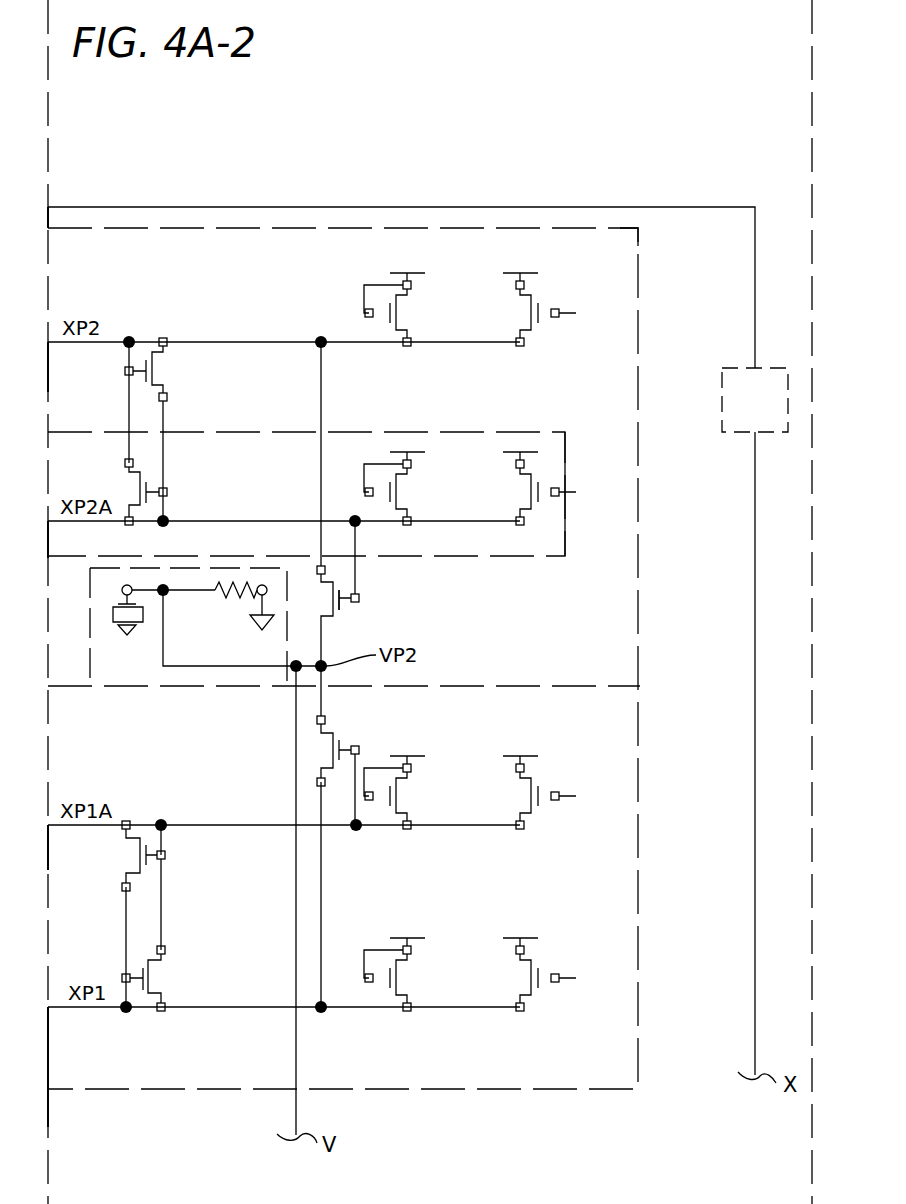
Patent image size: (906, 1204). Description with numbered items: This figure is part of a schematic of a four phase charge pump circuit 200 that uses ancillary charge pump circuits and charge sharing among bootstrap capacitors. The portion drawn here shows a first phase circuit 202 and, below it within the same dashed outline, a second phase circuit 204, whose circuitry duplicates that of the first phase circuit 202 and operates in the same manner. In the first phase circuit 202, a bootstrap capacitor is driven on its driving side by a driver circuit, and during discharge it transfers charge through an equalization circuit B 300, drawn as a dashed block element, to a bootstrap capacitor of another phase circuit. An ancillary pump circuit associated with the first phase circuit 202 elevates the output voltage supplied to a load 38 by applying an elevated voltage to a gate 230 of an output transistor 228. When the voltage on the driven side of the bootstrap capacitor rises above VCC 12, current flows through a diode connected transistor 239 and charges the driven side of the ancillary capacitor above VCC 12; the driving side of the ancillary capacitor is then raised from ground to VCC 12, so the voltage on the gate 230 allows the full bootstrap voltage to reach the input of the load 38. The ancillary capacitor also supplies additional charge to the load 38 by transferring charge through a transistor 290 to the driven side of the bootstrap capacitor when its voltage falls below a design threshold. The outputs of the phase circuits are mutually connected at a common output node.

The VCC 12 is at (375, 254).
The load 38 is at (97, 663).
The sense amplifier circuit 200 is at (700, 315).
The first phase circuit 202 is at (640, 398).
The second phase circuit 204 is at (641, 783).
The output transistor 228 is at (338, 619).
The gate 230 is at (340, 590).
The diode connected transistor 239 is at (166, 366).
The transistor 290 is at (134, 493).
The equalization circuit B 300 is at (727, 428).